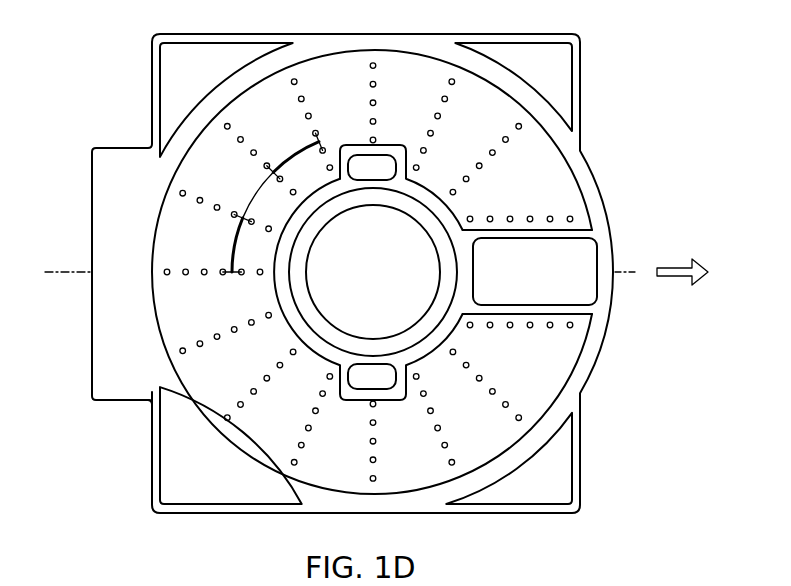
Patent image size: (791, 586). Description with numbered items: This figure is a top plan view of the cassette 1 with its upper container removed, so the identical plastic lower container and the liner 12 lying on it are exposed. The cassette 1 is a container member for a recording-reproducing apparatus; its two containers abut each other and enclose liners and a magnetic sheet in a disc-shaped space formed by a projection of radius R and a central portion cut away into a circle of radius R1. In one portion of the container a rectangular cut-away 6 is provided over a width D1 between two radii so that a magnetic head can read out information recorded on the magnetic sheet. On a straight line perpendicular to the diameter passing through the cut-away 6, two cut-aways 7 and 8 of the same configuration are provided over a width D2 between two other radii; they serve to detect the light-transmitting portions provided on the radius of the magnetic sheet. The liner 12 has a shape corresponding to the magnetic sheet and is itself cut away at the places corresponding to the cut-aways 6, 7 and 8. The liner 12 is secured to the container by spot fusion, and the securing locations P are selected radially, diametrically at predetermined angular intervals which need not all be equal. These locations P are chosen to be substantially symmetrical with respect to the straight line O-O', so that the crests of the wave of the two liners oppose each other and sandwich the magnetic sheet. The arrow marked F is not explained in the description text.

The cassette 1 is at (601, 135).
The rectangular cut-away 6 is at (587, 257).
The cut-away 7 is at (378, 155).
The cut-away 8 is at (386, 392).
The liner 12 is at (432, 484).
The radius of central circular cut-away R1 is at (124, 401).
The liner securing locations P is at (250, 154).
The end point of straight line O-O' O is at (632, 273).
The end point of straight line O- O' is at (54, 271).
The force direction F is at (691, 272).